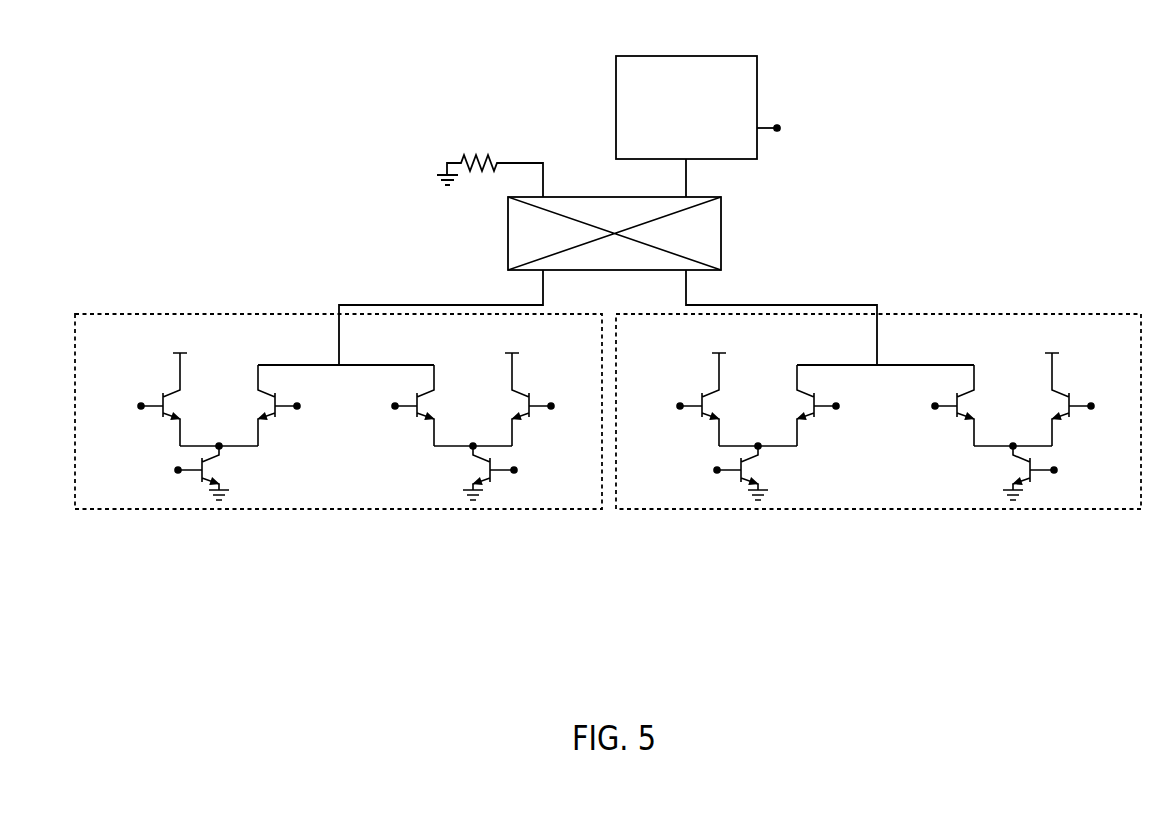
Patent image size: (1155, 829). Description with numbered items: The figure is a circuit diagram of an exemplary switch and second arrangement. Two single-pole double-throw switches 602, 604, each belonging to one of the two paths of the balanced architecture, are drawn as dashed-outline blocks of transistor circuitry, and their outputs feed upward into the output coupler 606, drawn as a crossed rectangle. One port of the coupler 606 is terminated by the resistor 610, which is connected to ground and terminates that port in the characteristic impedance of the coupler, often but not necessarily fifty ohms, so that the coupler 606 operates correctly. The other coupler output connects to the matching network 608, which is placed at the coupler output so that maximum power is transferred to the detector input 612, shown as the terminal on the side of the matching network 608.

The SPDT switch 602 is at (415, 542).
The SPDT switch 604 is at (813, 533).
The output coupler 606 is at (750, 240).
The matching network 608 is at (667, 153).
The resistor 610 is at (470, 140).
The detector input 612 is at (793, 128).